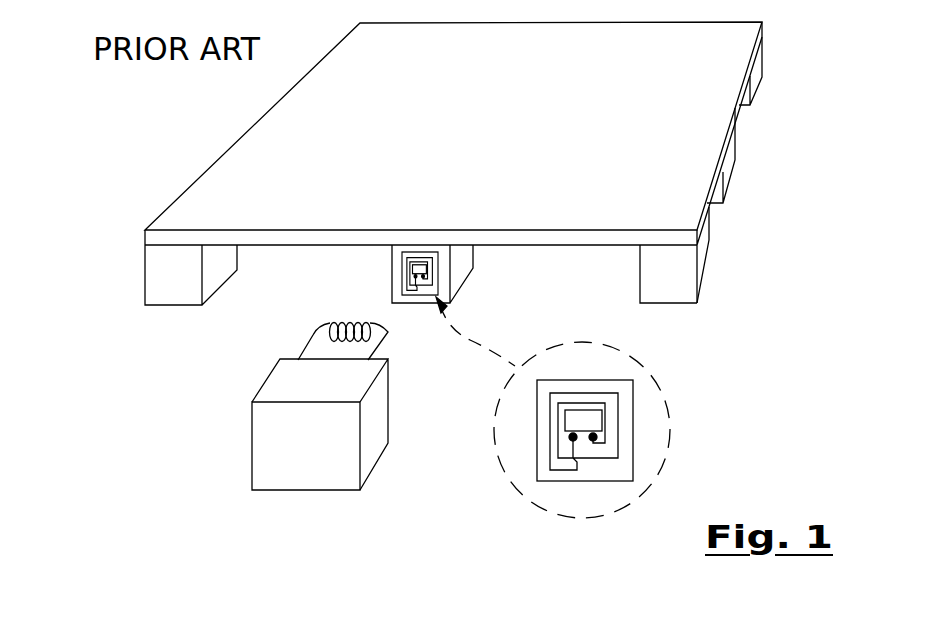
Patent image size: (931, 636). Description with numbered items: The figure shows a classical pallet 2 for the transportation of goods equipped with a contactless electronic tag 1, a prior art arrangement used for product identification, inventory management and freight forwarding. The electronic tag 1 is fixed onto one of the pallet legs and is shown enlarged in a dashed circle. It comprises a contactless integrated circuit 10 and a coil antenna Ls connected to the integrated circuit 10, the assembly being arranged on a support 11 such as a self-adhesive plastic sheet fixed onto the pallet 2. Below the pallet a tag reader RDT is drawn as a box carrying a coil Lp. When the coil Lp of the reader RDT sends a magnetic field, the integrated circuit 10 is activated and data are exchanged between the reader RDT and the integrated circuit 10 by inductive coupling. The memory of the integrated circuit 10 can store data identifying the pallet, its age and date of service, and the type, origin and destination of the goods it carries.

The electronic tag 1 is at (402, 279).
The pallet 2 is at (273, 153).
The contactless integrated circuit 10 is at (592, 421).
The support 11 is at (537, 460).
The coil Lp is at (320, 338).
The coil antenna Ls is at (618, 438).
The tag reader RDT is at (309, 460).